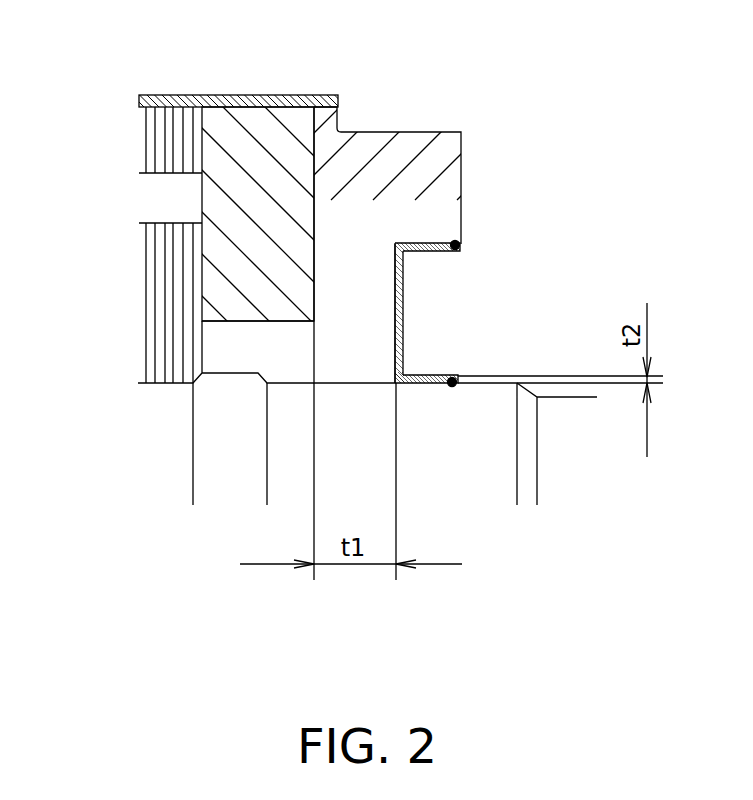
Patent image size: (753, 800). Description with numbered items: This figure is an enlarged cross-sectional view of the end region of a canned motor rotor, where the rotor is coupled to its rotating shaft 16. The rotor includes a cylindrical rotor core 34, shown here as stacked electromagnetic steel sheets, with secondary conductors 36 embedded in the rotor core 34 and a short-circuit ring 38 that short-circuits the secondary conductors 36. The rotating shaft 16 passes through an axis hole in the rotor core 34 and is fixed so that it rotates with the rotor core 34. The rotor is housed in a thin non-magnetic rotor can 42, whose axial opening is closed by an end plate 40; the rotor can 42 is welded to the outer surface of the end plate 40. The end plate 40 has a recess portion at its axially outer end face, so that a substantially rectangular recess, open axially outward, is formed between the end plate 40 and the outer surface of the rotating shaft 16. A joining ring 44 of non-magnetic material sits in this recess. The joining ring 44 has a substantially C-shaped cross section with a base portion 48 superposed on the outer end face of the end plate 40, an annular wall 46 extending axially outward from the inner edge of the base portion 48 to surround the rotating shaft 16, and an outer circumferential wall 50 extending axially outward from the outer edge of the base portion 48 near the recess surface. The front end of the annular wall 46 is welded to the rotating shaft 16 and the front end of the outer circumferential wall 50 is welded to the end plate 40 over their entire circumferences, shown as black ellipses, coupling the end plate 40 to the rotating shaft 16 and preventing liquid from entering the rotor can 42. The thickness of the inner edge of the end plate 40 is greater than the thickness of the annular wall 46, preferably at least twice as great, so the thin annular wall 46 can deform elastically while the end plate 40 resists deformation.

The rotating shaft 16 is at (222, 397).
The rotor core 34 is at (158, 148).
The secondary conductors 36 is at (153, 205).
The short-circuit ring 38 is at (258, 125).
The end plate 40 is at (388, 142).
The rotor can 42 is at (168, 96).
The joining ring 44 is at (493, 312).
The annular wall 46 is at (460, 355).
The base portion 48 is at (399, 309).
The outer circumferential wall 50 is at (433, 252).